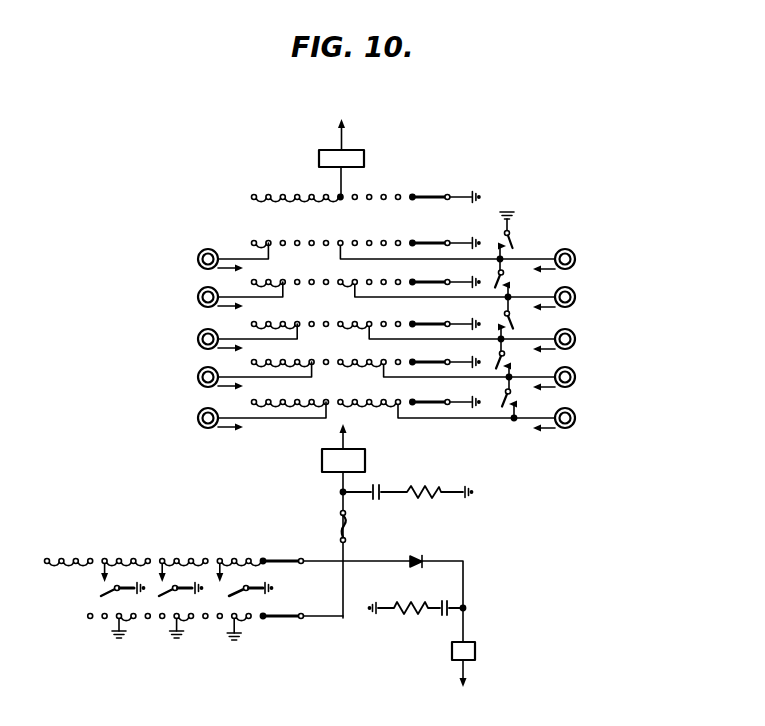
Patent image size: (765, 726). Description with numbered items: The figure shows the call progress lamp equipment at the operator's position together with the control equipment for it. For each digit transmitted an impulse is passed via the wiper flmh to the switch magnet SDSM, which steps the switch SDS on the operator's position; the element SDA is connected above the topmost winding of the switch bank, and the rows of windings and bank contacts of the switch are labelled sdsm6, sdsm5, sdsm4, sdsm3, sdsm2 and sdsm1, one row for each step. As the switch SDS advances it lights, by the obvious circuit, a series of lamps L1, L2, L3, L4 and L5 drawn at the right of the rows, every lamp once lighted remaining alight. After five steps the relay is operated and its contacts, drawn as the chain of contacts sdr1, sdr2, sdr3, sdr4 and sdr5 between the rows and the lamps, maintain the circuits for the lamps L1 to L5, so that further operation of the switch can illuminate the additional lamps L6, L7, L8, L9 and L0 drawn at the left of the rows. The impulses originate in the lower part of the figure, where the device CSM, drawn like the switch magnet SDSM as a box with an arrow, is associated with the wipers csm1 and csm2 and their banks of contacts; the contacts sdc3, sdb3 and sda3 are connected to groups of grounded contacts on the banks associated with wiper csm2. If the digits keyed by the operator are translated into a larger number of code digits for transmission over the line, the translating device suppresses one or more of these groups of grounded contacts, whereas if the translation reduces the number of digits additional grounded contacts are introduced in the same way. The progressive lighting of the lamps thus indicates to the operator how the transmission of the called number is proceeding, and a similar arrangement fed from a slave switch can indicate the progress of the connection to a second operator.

The switching device A SDA is at (341, 158).
The switch SDS is at (353, 176).
The switching device S contact 6 sdsm6 is at (445, 188).
The switching device S contact 5 sdsm5 is at (445, 235).
The switching device S contact 4 sdsm4 is at (445, 274).
The switching device S contact 3 sdsm3 is at (445, 316).
The switching device S contact 2 sdsm2 is at (445, 354).
The switching device S contact 1 sdsm1 is at (445, 394).
The relay contact 1 sdr1 is at (524, 237).
The relay contact 2 sdr2 is at (521, 279).
The relay contact 3 sdr3 is at (525, 319).
The relay contact 4 sdr4 is at (522, 359).
The relay contact 5 sdr5 is at (527, 399).
The lamp L0 is at (219, 257).
The lamp L1 is at (568, 420).
The lamp L2 is at (568, 379).
The lamp L3 is at (568, 341).
The lamp L4 is at (568, 299).
The lamp L5 is at (568, 261).
The lamp L6 is at (248, 416).
The lamp L7 is at (241, 376).
The lamp L8 is at (233, 338).
The lamp L9 is at (226, 296).
The switch magnet SDSM is at (397, 521).
The wiper flmh is at (370, 527).
The control switch magnet contact 1 csm1 is at (361, 590).
The wiper csm2 is at (301, 606).
The control switch magnet CSM is at (443, 644).
The switching device C contact 3 sdc3 is at (125, 578).
The switching device B contact 3 sdb3 is at (183, 578).
The switching device A contact 3 sda3 is at (245, 578).